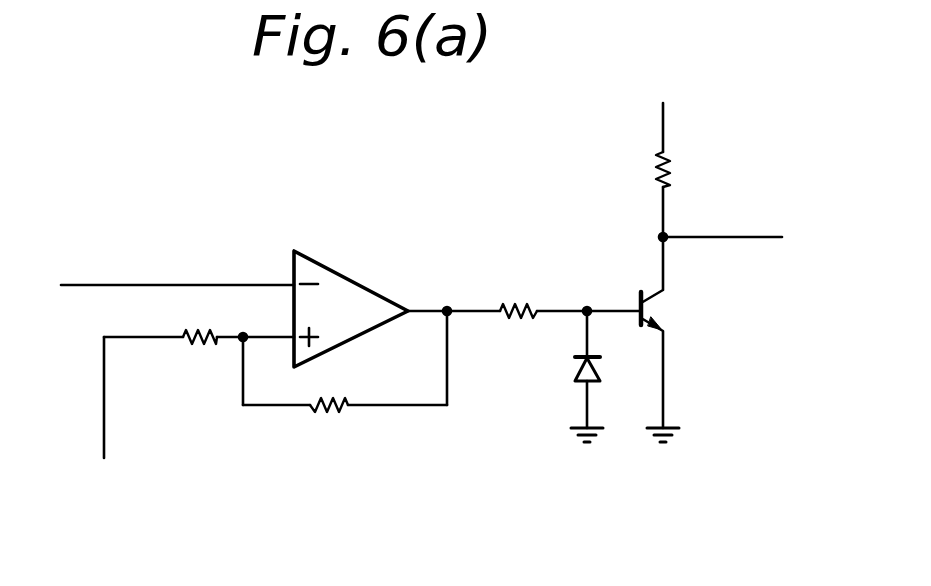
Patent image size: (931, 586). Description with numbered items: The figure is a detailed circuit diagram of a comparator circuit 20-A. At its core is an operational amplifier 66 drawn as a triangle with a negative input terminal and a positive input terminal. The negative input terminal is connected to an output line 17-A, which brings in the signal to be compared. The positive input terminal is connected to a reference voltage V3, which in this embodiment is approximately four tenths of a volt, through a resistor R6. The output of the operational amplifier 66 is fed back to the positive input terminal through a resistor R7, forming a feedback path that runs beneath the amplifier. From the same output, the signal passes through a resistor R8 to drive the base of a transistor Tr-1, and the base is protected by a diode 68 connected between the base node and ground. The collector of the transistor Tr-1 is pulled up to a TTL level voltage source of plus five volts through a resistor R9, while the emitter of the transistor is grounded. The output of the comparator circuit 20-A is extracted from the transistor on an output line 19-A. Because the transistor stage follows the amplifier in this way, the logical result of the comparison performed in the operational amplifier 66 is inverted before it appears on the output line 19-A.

The output line 17-A is at (100, 285).
The reference voltage V3 is at (139, 416).
The resistor R6 is at (196, 348).
The operational amplifier 66 is at (357, 277).
The resistor R7 is at (331, 418).
The resistor R8 is at (517, 303).
The diode 68 is at (567, 366).
The transistor Tr-1 is at (668, 307).
The resistor R9 is at (678, 168).
The output line 19-A is at (745, 237).
The comparator circuit 20-A is at (760, 545).